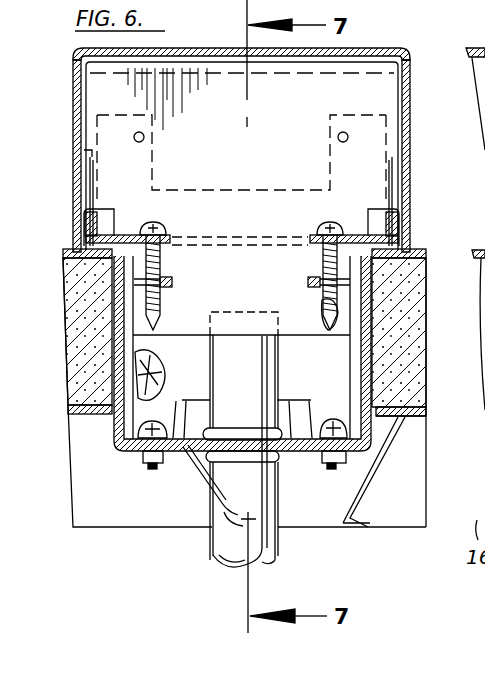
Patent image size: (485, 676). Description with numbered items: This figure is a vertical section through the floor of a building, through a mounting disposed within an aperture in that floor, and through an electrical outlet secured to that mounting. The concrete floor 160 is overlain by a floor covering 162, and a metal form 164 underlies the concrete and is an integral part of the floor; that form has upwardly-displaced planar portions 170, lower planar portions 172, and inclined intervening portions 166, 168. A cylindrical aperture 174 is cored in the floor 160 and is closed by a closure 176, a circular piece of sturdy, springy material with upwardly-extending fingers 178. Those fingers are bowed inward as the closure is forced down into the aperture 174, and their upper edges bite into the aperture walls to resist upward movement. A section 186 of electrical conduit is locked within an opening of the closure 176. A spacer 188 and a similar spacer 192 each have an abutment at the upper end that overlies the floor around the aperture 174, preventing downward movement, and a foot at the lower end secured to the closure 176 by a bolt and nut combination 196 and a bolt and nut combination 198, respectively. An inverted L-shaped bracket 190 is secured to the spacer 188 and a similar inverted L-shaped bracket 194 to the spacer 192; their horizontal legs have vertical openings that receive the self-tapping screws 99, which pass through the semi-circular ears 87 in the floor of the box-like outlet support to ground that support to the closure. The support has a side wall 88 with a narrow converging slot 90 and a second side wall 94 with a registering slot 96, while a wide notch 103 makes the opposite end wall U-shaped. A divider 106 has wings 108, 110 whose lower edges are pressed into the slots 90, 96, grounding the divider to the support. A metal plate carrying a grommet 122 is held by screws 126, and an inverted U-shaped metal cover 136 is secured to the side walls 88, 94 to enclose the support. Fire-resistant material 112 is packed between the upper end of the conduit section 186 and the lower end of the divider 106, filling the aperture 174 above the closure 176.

The metal cover 136 is at (385, 50).
The divider 106 is at (387, 96).
The grommet 122 is at (484, 111).
The second side wall 94 is at (412, 157).
The screws 126 is at (484, 147).
The wing 110 is at (404, 194).
The slot 96 is at (406, 204).
The floor covering 162 is at (420, 248).
The side wall 88 is at (86, 152).
The wing 108 is at (100, 187).
The slot 90 is at (80, 202).
The self-tapping screw 99 is at (150, 222).
The notch 103 is at (257, 180).
The semi-circular ears 87 is at (310, 237).
The inverted L-shaped bracket 190 is at (168, 280).
The spacer 188 is at (144, 333).
The inverted L-shaped bracket 194 is at (311, 282).
The fire-resistant material 112 is at (157, 371).
The section of electrical conduit 186 is at (272, 358).
The fingers 178 is at (328, 387).
The spacer 192 is at (421, 313).
The concrete floor 160 is at (427, 348).
The cylindrical aperture 174 is at (425, 403).
The upwardly-displaced planar portions 170 is at (425, 441).
The metal form 164 is at (395, 468).
The bolt and nut combination 198 is at (343, 470).
The closure 176 is at (301, 458).
The bolt and nut combination 196 is at (155, 470).
The inclined intervening portion 166 is at (185, 512).
The lower planar portions 172 is at (308, 528).
The inclined intervening portion 168 is at (370, 528).